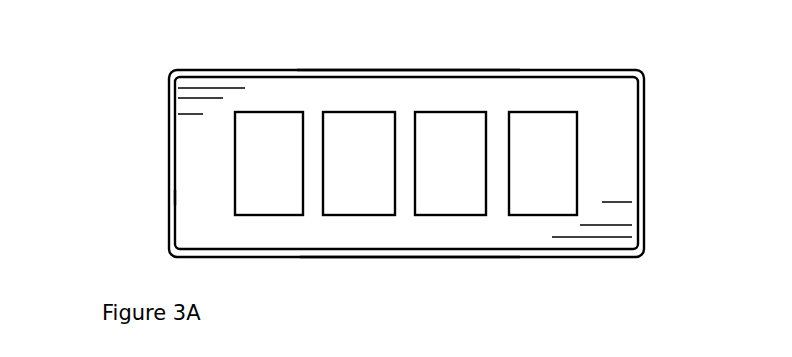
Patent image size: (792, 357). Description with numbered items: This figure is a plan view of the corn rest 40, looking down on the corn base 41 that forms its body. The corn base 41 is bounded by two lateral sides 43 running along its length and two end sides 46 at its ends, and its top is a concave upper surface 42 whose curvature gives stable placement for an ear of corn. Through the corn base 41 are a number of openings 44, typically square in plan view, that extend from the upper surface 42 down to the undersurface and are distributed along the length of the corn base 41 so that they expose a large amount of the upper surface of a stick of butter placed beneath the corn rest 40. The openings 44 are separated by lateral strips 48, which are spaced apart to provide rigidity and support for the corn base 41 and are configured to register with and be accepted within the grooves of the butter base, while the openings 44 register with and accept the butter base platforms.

The corn rest 40 is at (690, 100).
The corn base 41 is at (192, 212).
The concave upper surface 42 is at (202, 157).
The lateral sides 43 is at (297, 70).
The openings 44 is at (277, 173).
The end sides 46 is at (170, 197).
The lateral strips 48 is at (402, 150).